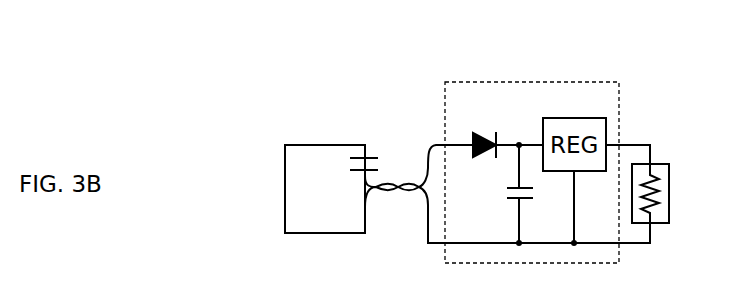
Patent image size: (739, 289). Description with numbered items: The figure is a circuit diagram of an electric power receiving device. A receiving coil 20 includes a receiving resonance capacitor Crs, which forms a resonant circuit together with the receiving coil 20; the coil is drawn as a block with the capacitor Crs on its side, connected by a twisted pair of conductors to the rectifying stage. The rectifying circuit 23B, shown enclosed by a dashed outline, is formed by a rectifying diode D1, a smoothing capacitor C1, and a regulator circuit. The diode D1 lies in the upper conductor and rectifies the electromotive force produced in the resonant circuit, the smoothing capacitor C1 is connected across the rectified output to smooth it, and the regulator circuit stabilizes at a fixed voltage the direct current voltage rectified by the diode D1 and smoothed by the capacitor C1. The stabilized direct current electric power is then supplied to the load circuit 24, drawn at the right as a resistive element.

The receiving coil 20 is at (285, 188).
The receiving resonance capacitor Crs is at (383, 162).
The rectifying diode D1 is at (506, 129).
The smoothing capacitor C1 is at (501, 194).
The rectifying circuit 23B is at (540, 81).
The load circuit 24 is at (672, 196).